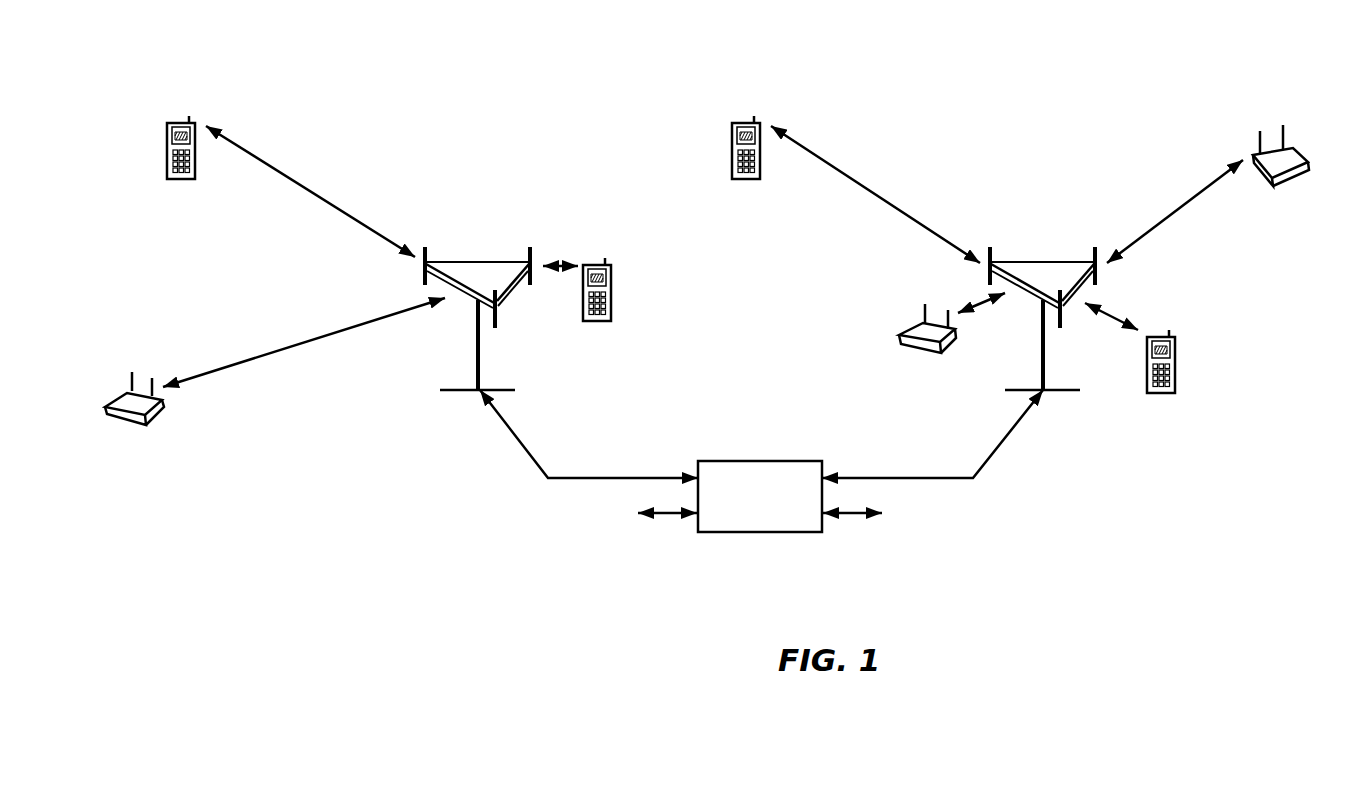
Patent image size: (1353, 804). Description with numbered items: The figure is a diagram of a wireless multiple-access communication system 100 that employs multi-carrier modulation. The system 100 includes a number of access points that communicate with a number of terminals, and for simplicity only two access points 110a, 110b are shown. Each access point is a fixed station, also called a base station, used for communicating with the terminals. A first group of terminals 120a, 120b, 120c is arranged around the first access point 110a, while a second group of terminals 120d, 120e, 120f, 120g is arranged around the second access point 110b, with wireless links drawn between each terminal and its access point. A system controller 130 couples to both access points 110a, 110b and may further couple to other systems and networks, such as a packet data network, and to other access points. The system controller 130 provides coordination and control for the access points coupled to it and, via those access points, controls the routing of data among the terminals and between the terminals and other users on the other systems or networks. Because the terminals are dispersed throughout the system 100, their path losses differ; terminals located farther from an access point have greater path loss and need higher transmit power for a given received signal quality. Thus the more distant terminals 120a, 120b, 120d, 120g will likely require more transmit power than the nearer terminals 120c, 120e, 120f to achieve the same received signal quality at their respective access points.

The wireless multiple-access communication system 100 is at (1196, 32).
The access point 110a is at (483, 249).
The access point 110b is at (1048, 249).
The terminal 120a is at (127, 397).
The terminal 120b is at (184, 123).
The terminal 120c is at (594, 265).
The terminal 120d is at (749, 123).
The terminal 120e is at (920, 326).
The terminal 120f is at (1159, 337).
The terminal 120g is at (1292, 149).
The system controller 130 is at (755, 460).